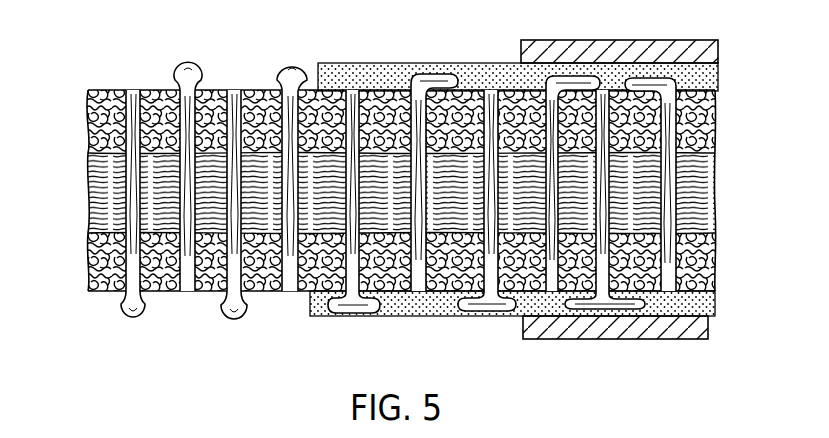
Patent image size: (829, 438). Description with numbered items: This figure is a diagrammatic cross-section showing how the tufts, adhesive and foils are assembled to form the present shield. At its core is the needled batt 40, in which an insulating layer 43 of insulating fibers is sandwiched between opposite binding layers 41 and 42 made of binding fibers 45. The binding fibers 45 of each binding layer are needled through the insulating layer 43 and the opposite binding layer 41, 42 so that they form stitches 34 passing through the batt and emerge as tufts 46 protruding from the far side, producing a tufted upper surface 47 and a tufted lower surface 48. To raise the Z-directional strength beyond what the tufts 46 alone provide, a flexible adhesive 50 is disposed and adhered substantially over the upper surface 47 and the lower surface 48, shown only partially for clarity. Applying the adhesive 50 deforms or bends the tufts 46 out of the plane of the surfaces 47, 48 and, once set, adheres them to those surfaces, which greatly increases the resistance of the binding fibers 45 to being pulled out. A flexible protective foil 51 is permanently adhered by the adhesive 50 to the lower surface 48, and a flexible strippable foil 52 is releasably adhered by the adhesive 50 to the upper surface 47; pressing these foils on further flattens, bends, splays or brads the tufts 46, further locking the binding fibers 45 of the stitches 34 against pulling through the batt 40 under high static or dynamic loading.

The stitches 34 is at (184, 213).
The batt 40 is at (375, 183).
The binding layer 41 is at (95, 252).
The binding layer 42 is at (92, 110).
The insulating layer 43 is at (82, 192).
The binding fibers 45 is at (150, 90).
The tufts 46 is at (170, 70).
The tufted upper surface 47 is at (96, 82).
The tufted lower surface 48 is at (97, 283).
The flexible adhesive 50 is at (365, 60).
The protective foil 51 is at (637, 333).
The strippable foil 52 is at (538, 32).